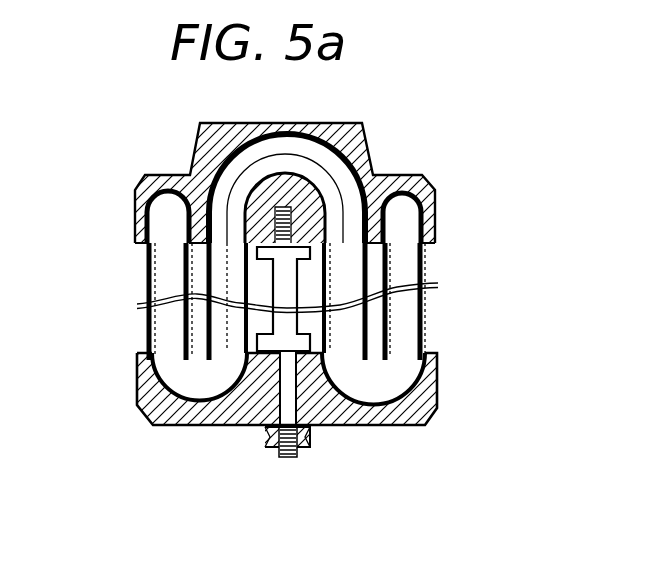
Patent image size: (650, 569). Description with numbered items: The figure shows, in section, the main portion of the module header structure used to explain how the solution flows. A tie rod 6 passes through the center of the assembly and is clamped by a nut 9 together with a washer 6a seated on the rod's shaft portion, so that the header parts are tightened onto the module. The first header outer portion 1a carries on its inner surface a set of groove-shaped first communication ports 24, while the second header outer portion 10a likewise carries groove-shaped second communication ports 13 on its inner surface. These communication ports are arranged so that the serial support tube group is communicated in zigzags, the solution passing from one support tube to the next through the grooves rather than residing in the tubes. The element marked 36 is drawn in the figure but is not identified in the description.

The second communication ports 13 is at (315, 163).
The insert 36 is at (287, 291).
The second header outer portion 10a is at (418, 200).
The washer 6a is at (268, 252).
The first communication ports 24 is at (177, 378).
The first header outer portion 1a is at (148, 415).
The nut 9 is at (312, 437).
The tie rod 6 is at (350, 426).